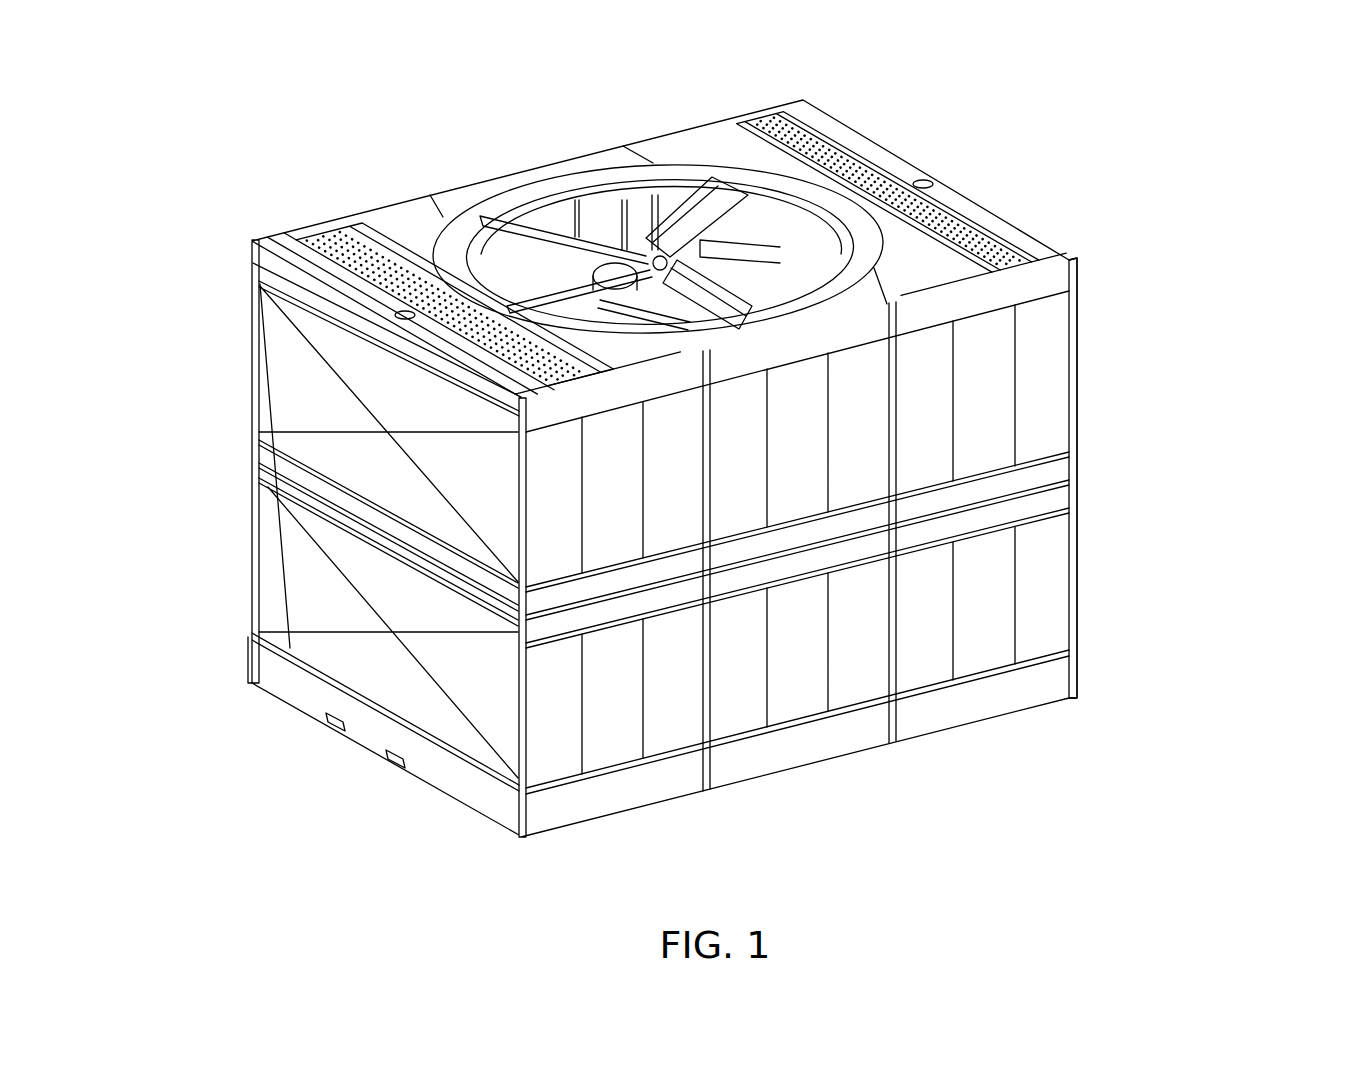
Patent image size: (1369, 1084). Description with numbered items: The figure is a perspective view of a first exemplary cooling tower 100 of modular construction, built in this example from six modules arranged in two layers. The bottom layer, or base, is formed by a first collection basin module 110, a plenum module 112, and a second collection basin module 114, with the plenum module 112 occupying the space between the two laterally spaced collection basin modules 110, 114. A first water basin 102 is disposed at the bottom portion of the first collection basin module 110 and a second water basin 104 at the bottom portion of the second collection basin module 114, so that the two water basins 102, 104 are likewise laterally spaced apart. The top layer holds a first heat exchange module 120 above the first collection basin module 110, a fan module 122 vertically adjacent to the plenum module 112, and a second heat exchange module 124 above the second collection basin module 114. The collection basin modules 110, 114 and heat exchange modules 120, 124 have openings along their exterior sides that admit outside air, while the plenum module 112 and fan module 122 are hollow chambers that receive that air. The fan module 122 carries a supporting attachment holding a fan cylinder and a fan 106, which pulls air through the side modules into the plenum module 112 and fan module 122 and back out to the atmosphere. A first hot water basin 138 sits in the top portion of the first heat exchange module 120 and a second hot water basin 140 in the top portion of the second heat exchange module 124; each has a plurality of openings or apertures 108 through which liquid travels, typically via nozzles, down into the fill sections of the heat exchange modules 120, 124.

The cooling tower 100 is at (1138, 166).
The first water basin 102 is at (465, 787).
The second water basin 104 is at (1057, 682).
The fan 106 is at (687, 190).
The openings or apertures 108 is at (324, 242).
The first collection basin module 110 is at (250, 589).
The plenum module 112 is at (798, 767).
The second collection basin module 114 is at (1078, 566).
The first heat exchange module 120 is at (250, 384).
The fan module 122 is at (547, 140).
The second heat exchange module 124 is at (1078, 346).
The first hot water basin 138 is at (356, 228).
The second hot water basin 140 is at (840, 143).